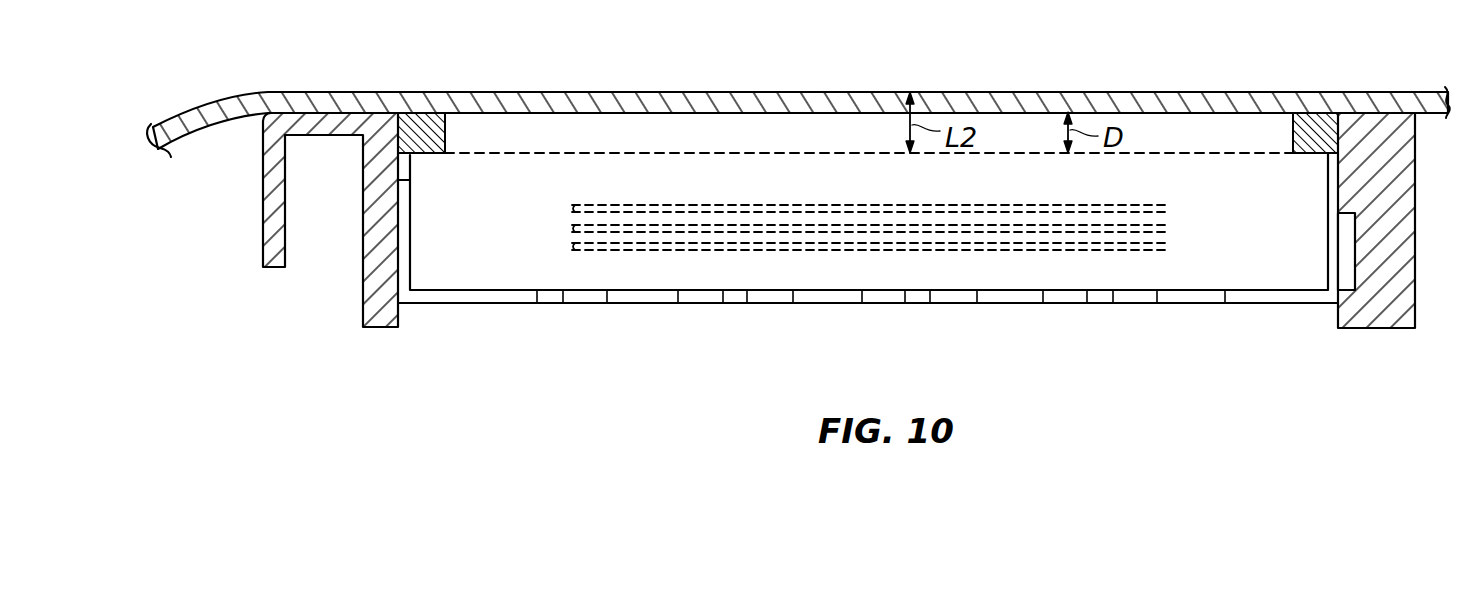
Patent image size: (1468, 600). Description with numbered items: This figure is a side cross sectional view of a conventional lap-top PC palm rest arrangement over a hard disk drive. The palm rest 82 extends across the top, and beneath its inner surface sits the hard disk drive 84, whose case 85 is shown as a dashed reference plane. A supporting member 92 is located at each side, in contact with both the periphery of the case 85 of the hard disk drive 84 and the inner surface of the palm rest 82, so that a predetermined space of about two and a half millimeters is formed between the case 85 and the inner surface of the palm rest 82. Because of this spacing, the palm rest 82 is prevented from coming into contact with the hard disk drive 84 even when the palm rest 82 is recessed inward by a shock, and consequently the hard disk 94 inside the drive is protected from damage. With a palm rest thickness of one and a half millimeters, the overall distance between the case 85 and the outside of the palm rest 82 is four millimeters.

The palm rest 82 is at (1172, 100).
The hard disk drive 84 is at (530, 272).
The case 85 is at (1197, 152).
The supporting member 92 is at (437, 122).
The hard disk 94 is at (1165, 207).